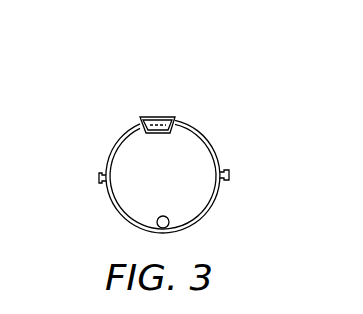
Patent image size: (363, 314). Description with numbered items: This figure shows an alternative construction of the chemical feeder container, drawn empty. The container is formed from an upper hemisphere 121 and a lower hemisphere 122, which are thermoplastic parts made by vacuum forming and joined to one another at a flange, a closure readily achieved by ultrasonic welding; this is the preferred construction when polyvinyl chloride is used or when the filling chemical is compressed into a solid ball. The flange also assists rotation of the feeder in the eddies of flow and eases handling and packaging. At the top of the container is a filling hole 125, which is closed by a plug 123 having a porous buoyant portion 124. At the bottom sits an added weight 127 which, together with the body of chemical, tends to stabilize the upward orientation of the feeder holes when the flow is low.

The upper hemisphere 121 is at (122, 138).
The lower hemisphere 122 is at (209, 206).
The plug 123 is at (176, 118).
The porous buoyant portion 124 is at (154, 116).
The filling hole 125 is at (175, 134).
The added weight 127 is at (161, 215).